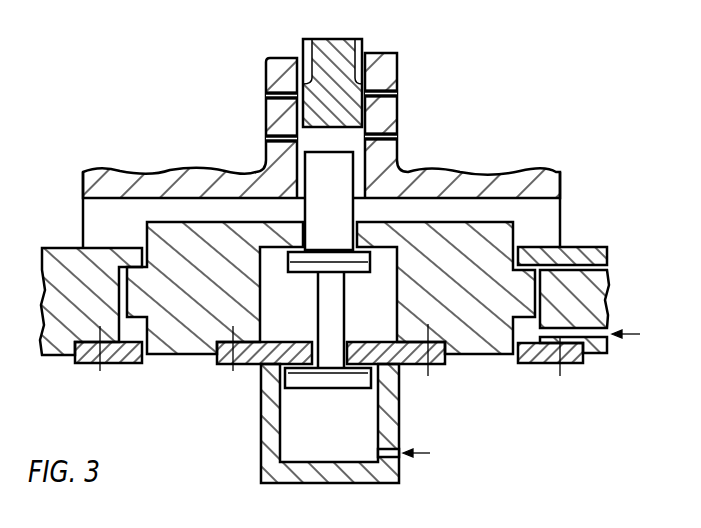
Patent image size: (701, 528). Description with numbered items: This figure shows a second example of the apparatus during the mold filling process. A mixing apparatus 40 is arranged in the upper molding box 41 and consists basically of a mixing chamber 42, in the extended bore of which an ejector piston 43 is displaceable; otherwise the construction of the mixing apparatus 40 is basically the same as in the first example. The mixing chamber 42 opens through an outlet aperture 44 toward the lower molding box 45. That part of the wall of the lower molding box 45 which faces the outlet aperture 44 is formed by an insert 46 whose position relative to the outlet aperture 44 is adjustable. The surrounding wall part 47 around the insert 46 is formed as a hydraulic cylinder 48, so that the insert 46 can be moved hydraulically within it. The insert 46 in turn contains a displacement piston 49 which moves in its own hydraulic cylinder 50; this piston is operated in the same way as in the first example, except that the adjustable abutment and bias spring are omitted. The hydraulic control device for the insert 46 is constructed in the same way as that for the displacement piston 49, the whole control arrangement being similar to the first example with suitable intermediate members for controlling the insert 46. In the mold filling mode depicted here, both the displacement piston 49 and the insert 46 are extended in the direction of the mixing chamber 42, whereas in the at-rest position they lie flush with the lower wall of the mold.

The mixing apparatus 40 is at (252, 53).
The upper molding box 41 is at (150, 175).
The mixing chamber 42 is at (320, 137).
The ejector piston 43 is at (313, 97).
The outlet aperture 44 is at (360, 198).
The lower molding box 45 is at (46, 372).
The insert 46 is at (188, 332).
The surrounding wall part 47 is at (65, 253).
The hydraulic cylinder 48 is at (135, 331).
The displacement piston 49 is at (320, 209).
The hydraulic cylinder 50 is at (293, 418).